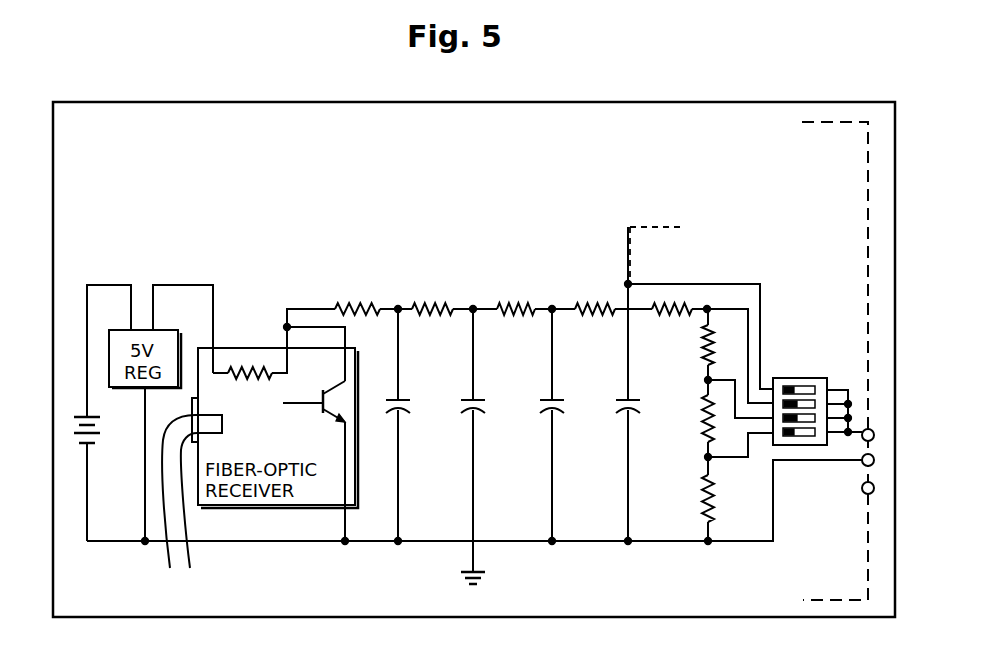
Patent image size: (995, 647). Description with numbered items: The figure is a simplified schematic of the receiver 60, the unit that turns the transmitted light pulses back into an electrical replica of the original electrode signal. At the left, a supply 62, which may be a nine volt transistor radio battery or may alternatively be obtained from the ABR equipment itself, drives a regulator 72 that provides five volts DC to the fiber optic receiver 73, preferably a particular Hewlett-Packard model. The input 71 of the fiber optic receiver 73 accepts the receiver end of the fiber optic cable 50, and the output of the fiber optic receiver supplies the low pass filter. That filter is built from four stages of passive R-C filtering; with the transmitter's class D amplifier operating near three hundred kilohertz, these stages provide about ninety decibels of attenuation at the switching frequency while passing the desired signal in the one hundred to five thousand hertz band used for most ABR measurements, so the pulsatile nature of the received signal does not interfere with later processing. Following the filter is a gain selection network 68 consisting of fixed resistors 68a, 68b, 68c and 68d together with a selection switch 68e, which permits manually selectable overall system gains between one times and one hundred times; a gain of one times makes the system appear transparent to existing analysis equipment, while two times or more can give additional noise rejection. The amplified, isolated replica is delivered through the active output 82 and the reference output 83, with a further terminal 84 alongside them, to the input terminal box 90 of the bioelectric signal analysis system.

The receiver 60 is at (216, 102).
The regulator 72 is at (117, 328).
The fiber optic receiver 73 is at (263, 346).
The input 71 is at (223, 420).
The supply 62 is at (112, 428).
The fiber optic cable 50 is at (192, 556).
The input terminal box 90 is at (513, 296).
The gain selection network 68 is at (747, 361).
The fixed resistor 68a is at (675, 317).
The fixed resistor 68b is at (701, 348).
The fixed resistor 68c is at (702, 405).
The fixed resistor 68d is at (704, 499).
The selection switch 68e is at (817, 382).
The active output 82 is at (864, 430).
The reference output 83 is at (863, 466).
The ground terminal 84 is at (863, 495).